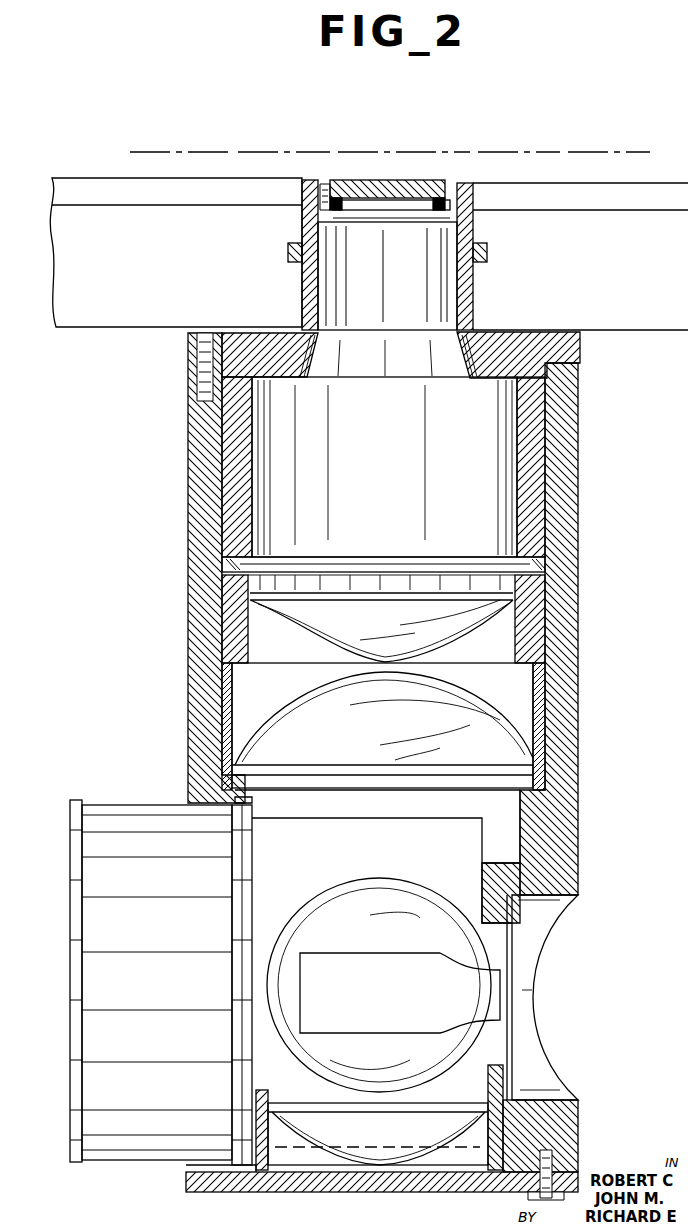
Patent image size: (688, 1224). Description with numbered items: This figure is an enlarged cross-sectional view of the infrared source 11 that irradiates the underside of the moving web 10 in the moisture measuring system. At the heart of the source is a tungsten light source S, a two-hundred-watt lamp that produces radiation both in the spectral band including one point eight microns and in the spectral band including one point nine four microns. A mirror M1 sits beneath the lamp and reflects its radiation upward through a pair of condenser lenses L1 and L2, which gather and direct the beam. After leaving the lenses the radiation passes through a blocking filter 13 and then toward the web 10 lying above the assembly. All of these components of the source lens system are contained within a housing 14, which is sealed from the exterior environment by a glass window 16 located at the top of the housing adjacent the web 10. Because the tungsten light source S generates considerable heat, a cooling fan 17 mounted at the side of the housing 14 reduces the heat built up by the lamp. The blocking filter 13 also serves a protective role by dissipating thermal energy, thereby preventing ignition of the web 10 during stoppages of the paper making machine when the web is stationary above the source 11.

The web 10 is at (234, 150).
The source of infrared radiation 11 is at (186, 503).
The blocking filter 13 is at (382, 210).
The housing 14 is at (566, 698).
The glass window 16 is at (408, 190).
The cooling fan 17 is at (122, 1140).
The condenser lens L1 is at (382, 725).
The condenser lens L2 is at (381, 627).
The tungsten light source S is at (383, 985).
The mirror M1 is at (378, 1134).